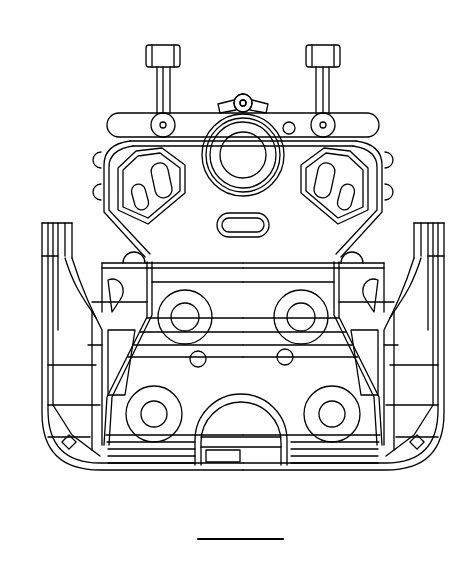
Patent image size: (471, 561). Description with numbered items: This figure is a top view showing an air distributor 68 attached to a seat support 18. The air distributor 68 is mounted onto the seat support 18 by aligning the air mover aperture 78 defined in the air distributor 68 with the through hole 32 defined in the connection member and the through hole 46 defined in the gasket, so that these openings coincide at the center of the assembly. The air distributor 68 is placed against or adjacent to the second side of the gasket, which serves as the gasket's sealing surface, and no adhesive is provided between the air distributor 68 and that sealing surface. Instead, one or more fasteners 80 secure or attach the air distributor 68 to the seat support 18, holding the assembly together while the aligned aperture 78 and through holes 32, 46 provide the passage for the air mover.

The seat support 18 is at (100, 102).
The air distributor 68 is at (181, 243).
The through hole 32 is at (240, 95).
The through hole 46 is at (243, 103).
The air mover aperture 78 is at (243, 103).
The fasteners 80 is at (196, 362).